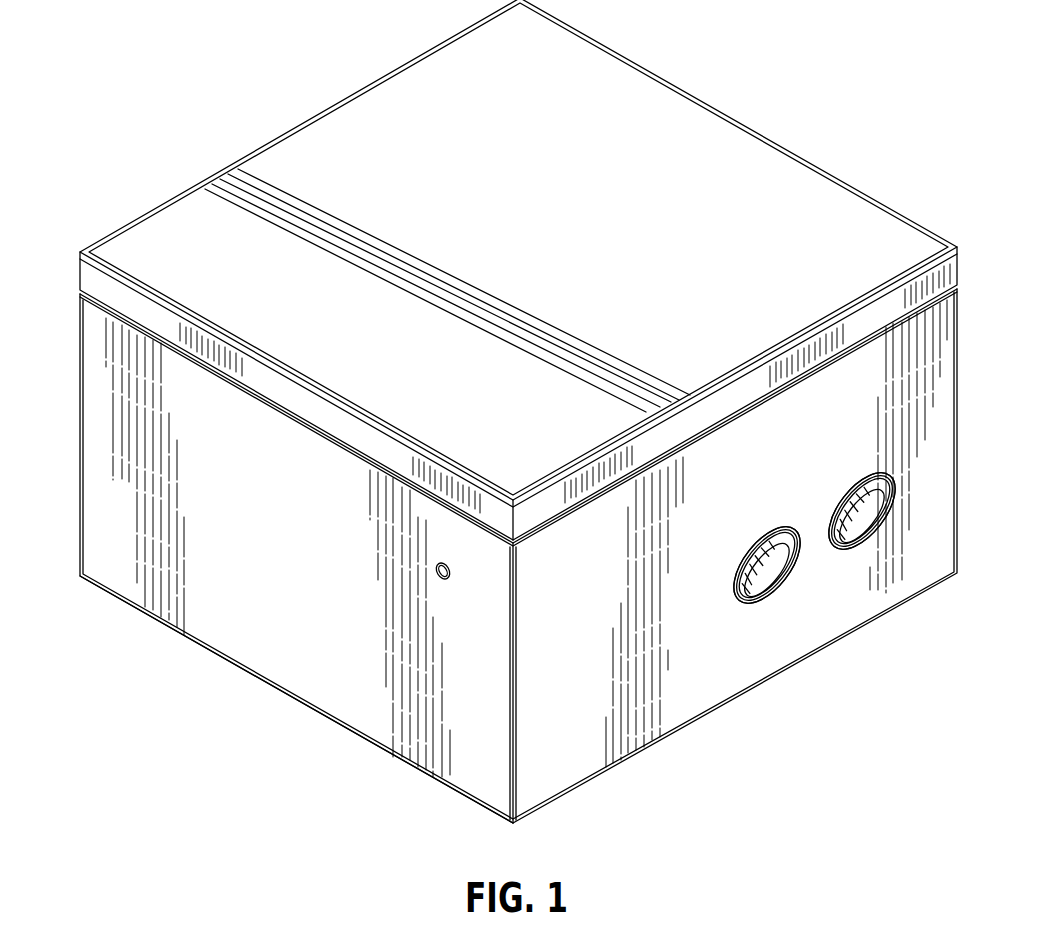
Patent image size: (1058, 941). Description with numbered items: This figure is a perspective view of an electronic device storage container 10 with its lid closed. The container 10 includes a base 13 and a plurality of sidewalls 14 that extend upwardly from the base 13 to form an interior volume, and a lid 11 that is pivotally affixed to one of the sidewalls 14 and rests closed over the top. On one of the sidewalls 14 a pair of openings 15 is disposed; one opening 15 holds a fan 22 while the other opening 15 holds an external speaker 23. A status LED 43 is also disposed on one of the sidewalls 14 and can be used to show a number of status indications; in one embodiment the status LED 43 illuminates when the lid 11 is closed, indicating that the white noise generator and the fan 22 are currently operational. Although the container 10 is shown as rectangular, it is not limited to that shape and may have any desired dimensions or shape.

The electronic device storage container 10 is at (201, 90).
The lid 11 is at (770, 160).
The base 13 is at (290, 698).
The sidewalls 14 is at (96, 465).
The openings 15 is at (771, 526).
The fan 22 is at (786, 582).
The external speaker 23 is at (880, 535).
The status LED 43 is at (445, 580).